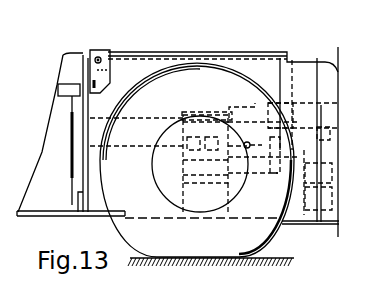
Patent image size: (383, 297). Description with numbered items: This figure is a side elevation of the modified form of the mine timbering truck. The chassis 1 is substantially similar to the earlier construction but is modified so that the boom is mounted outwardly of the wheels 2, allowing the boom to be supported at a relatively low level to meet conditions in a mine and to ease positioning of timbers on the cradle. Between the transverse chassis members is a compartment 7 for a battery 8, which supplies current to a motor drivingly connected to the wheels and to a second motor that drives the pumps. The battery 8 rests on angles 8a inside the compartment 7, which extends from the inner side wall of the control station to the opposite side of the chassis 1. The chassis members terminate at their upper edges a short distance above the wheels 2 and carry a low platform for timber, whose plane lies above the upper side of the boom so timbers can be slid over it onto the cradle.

The chassis 1 is at (78, 58).
The wheels 2 is at (112, 215).
The battery compartment 7 is at (78, 172).
The battery 8 is at (62, 152).
The angles 8a is at (82, 195).